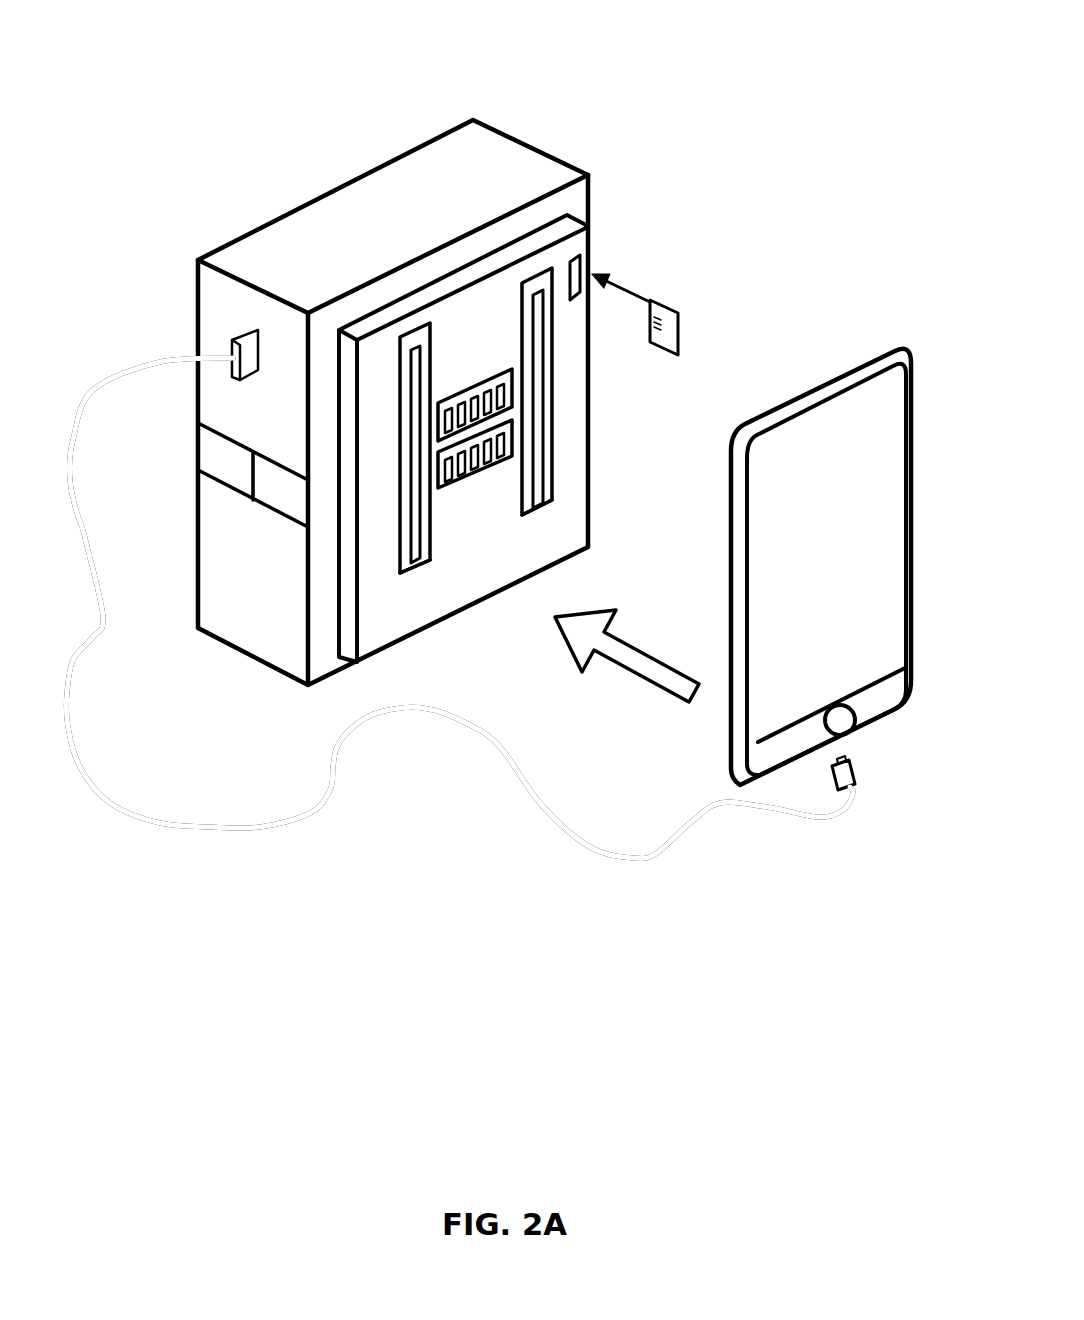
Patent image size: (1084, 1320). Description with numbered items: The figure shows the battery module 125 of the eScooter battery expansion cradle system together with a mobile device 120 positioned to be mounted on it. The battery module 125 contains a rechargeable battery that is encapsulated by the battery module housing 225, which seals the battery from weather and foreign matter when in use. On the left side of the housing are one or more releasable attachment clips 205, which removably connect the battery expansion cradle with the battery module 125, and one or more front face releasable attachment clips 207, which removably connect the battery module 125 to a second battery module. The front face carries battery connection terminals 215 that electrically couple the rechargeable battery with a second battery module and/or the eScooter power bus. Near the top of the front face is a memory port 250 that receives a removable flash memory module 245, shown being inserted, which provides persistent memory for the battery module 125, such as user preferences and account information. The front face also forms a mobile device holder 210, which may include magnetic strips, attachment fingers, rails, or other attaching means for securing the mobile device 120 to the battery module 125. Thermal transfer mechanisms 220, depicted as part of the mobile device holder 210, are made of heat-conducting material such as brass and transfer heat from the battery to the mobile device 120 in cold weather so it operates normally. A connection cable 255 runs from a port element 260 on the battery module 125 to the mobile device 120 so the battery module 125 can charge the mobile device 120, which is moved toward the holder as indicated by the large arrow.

The battery module 125 is at (410, 72).
The battery module housing 225 is at (572, 160).
The releasable attachment clips 205 is at (220, 453).
The front face releasable attachment clips 207 is at (280, 490).
The power button 260 is at (232, 340).
The mobile device holder 210 is at (530, 500).
The thermal transfer mechanisms 220 is at (410, 518).
The battery connection terminals 215 is at (510, 440).
The memory port 250 is at (593, 230).
The flash memory module 245 is at (667, 307).
The mobile device 120 is at (830, 372).
The connection cable 255 is at (627, 860).